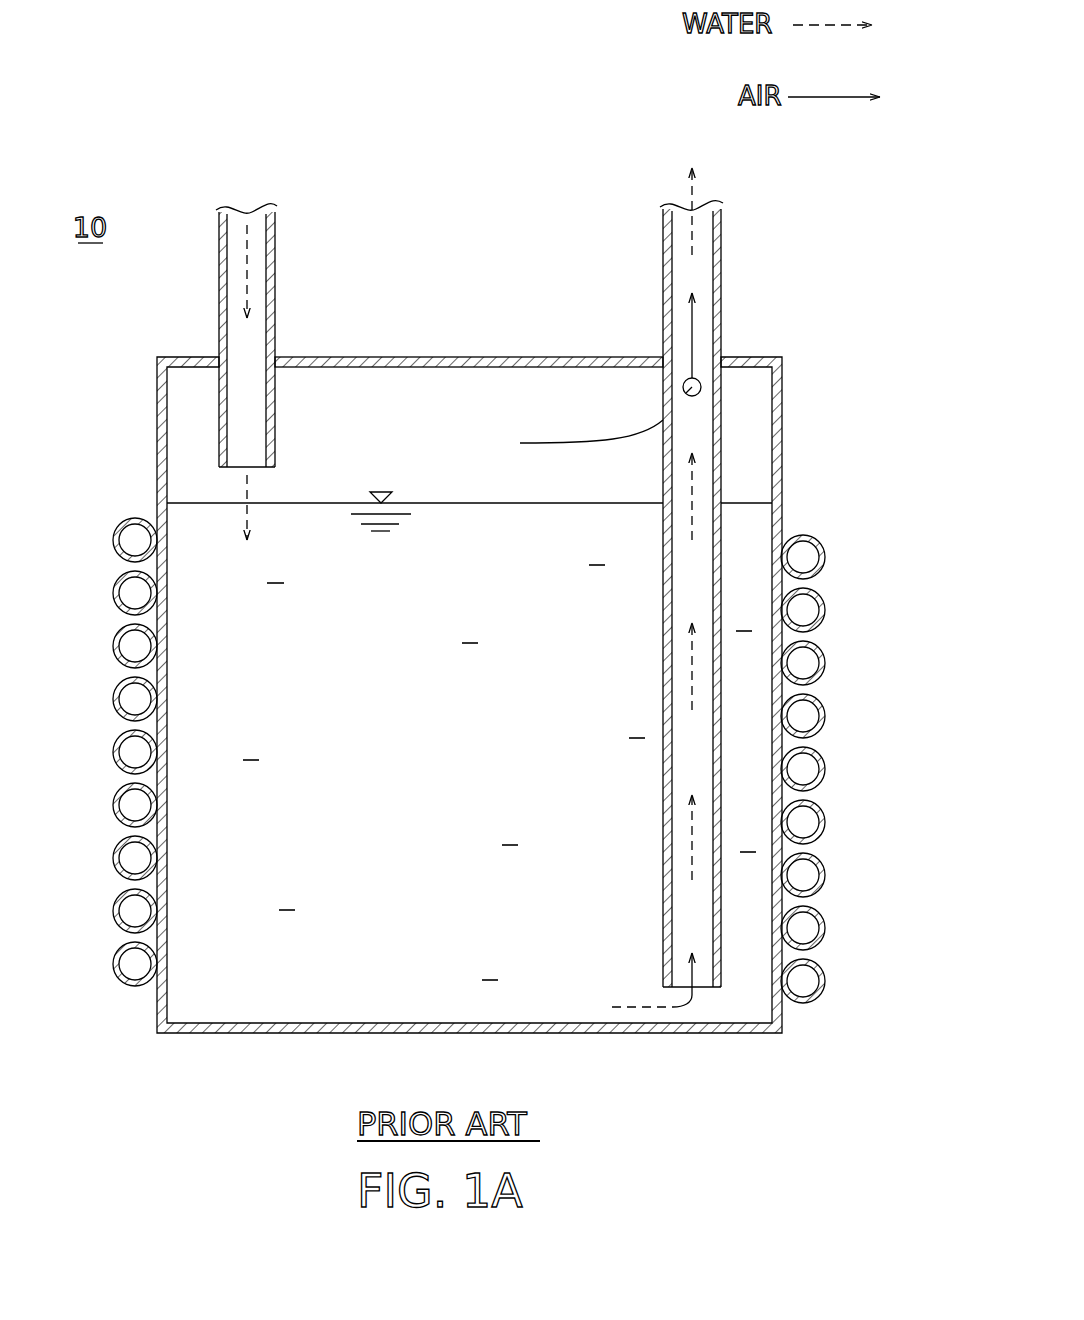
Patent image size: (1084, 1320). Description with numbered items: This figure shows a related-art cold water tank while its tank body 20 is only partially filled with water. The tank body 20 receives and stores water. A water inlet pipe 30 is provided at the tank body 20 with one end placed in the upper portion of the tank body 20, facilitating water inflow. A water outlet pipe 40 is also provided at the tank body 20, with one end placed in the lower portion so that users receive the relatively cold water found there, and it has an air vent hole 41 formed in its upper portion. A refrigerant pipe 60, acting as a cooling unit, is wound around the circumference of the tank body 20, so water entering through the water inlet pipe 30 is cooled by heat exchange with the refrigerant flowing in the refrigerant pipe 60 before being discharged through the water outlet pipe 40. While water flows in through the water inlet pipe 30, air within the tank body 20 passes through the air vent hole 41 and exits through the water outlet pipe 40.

The tank body 20 is at (155, 414).
The water inlet pipe 30 is at (219, 300).
The water outlet pipe 40 is at (721, 273).
The air vent hole 41 is at (701, 387).
The refrigerant pipe 60 is at (825, 553).